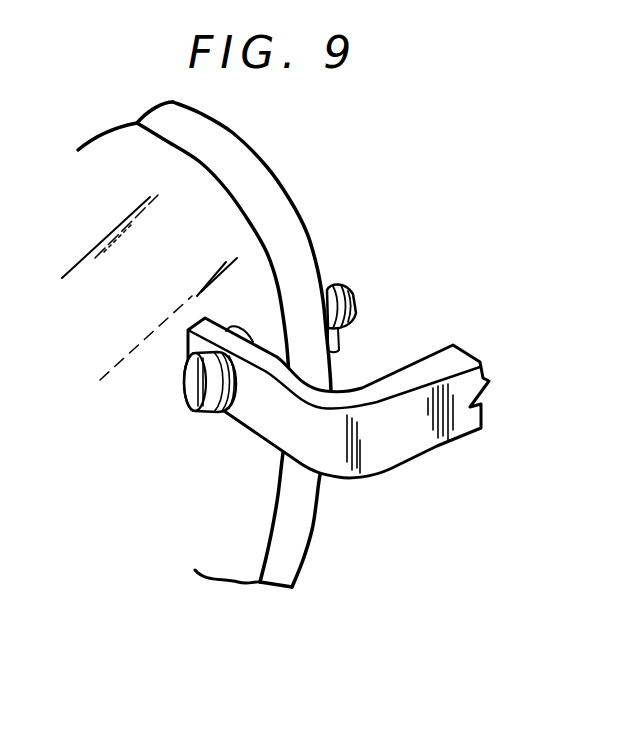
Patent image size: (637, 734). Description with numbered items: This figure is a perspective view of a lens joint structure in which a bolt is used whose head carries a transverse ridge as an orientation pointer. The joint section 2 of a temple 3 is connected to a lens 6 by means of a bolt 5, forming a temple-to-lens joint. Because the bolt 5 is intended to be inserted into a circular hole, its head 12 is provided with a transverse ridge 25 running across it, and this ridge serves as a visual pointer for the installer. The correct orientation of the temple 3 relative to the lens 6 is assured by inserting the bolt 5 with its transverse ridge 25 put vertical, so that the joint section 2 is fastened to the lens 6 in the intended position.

The joint section 2 is at (268, 447).
The temple 3 is at (460, 430).
The bolt 5 is at (331, 288).
The lens 6 is at (302, 530).
The head 12 is at (227, 411).
The transverse ridge 25 is at (185, 407).